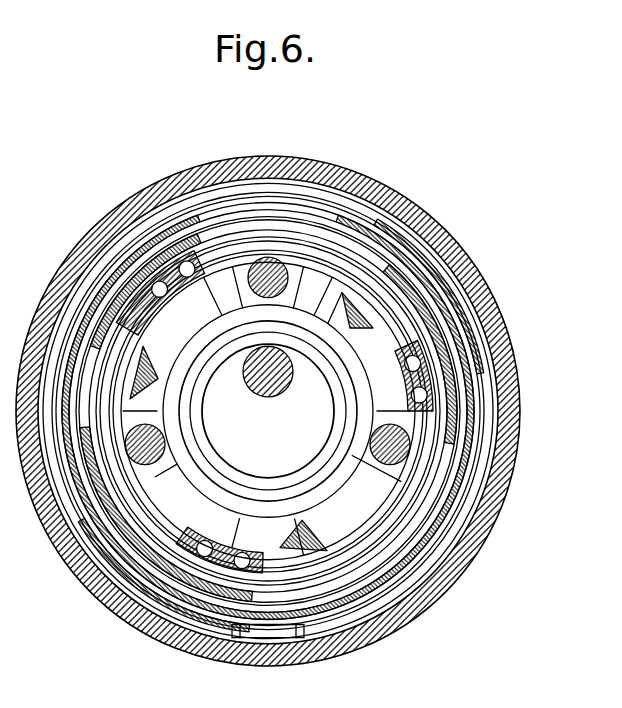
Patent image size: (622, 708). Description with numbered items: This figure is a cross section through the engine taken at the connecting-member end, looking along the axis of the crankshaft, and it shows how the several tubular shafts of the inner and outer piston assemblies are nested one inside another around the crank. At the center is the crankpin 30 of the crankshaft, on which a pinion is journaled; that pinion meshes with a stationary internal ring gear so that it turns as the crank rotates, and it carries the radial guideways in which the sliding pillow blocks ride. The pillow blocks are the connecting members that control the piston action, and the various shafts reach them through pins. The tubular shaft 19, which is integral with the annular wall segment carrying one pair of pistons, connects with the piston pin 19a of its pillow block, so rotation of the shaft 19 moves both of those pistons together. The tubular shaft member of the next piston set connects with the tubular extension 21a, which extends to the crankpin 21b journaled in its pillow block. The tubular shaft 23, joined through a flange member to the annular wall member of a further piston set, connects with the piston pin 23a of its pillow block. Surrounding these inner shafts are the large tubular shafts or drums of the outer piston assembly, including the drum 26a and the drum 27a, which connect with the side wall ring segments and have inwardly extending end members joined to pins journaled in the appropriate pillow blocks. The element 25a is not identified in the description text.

The tubular shaft 19 is at (300, 258).
The piston pin 19a is at (153, 462).
The tubular extension 21a is at (368, 273).
The crankpin 21b is at (268, 274).
The tubular shaft 23 is at (356, 315).
The piston pin 23a is at (375, 462).
The ring 25a is at (447, 458).
The tubular shaft or drum 26a is at (410, 550).
The tubular shaft or drum 27a is at (350, 610).
The crankpin 30 is at (253, 379).